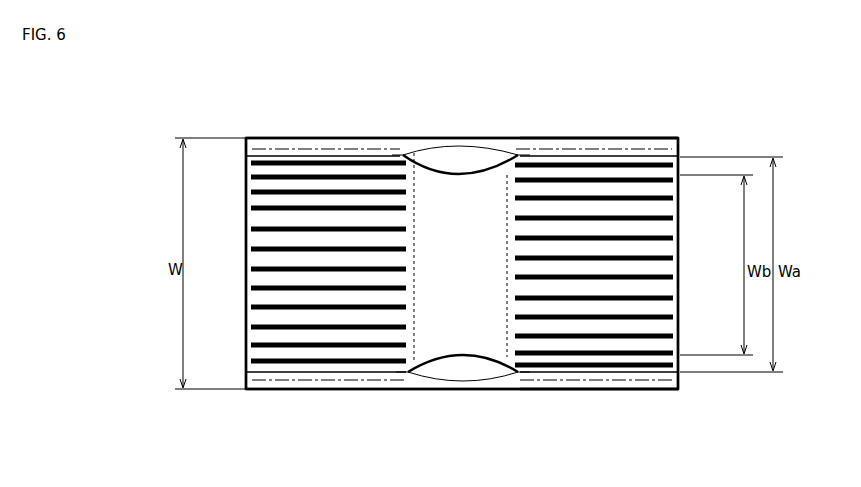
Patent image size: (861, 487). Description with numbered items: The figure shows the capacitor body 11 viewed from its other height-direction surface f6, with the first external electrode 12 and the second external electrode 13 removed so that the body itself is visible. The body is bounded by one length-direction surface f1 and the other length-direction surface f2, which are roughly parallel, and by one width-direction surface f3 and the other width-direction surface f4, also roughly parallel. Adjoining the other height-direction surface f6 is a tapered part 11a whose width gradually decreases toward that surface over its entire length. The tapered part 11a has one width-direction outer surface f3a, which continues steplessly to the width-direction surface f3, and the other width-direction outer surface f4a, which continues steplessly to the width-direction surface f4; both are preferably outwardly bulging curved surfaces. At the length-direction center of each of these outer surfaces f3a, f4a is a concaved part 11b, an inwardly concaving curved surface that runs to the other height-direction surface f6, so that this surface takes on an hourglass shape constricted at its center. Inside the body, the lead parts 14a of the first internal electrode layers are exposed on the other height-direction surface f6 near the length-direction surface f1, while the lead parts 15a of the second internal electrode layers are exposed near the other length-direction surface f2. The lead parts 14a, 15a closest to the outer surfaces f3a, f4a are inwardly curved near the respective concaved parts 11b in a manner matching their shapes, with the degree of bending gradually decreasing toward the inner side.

The capacitor body 11 is at (370, 138).
The tapered part 11a is at (412, 152).
The concaved part 11b is at (455, 160).
The first external electrode 12 is at (275, 146).
The second external electrode 13 is at (650, 147).
The lead part 14a is at (308, 163).
The lead part 15a is at (622, 167).
The one length-direction surface f1 is at (245, 268).
The other length-direction surface f2 is at (679, 270).
The one width-direction surface f3 is at (510, 138).
The one width-direction outer surface f3a is at (552, 145).
The other width-direction surface f4 is at (525, 392).
The other width-direction outer surface f4a is at (557, 383).
The other height-direction surface f6 is at (461, 325).